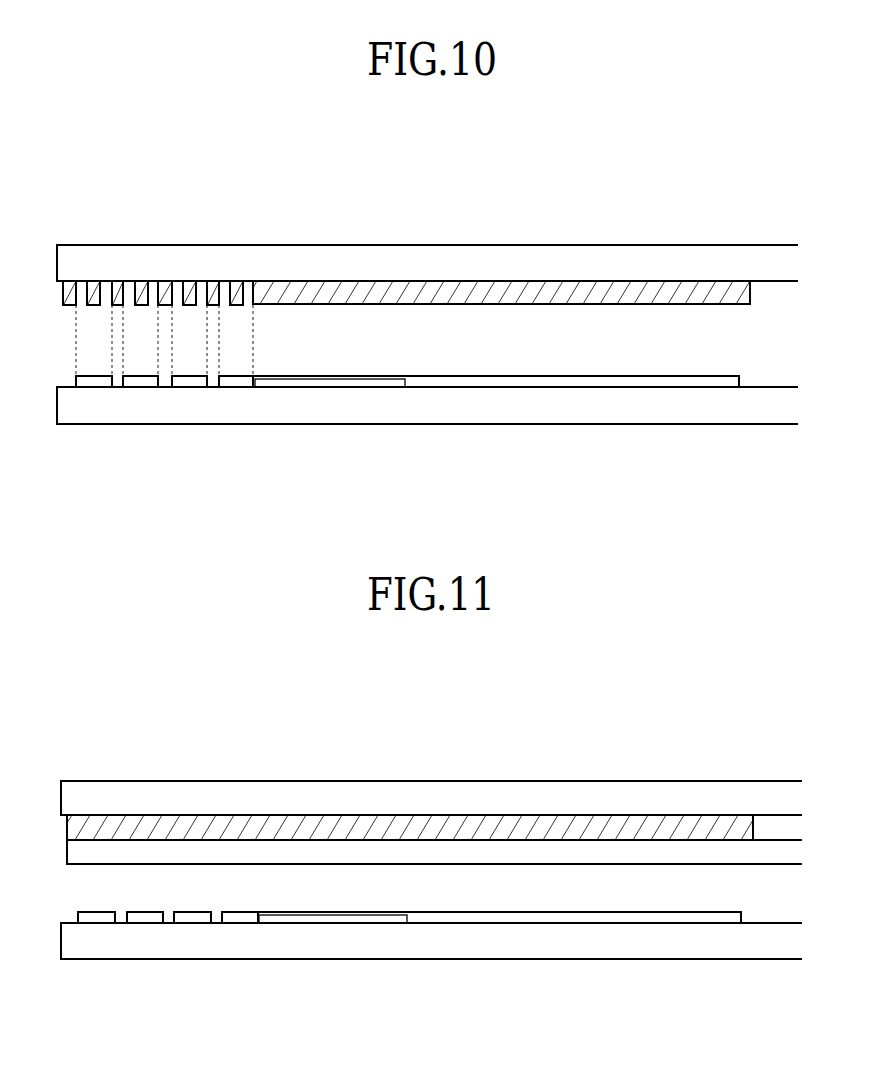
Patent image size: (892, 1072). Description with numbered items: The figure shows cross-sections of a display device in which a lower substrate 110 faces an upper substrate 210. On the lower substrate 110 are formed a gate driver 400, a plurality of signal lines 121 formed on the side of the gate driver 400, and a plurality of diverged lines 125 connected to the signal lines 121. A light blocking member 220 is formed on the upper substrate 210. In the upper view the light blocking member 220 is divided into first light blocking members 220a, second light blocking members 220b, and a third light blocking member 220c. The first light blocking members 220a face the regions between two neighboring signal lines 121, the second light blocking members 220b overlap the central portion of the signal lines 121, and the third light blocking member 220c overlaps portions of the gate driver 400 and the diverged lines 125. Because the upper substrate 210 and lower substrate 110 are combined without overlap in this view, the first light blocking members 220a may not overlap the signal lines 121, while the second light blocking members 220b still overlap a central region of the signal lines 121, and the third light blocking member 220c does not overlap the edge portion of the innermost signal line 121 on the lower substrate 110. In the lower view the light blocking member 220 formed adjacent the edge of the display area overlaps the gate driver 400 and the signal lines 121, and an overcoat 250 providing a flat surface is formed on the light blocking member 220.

In FIG. 10, the lower substrate 110 is at (410, 406).
In FIG. 11, the lower substrate 110 is at (413, 941).
In FIG. 10, the signal lines 121 is at (188, 383).
In FIG. 11, the signal lines 121 is at (191, 918).
In FIG. 10, the diverged lines 125 is at (318, 380).
In FIG. 11, the diverged lines 125 is at (321, 916).
In FIG. 10, the upper substrate 210 is at (411, 262).
In FIG. 11, the upper substrate 210 is at (415, 797).
In FIG. 10, the light blocking member 220 is at (406, 233).
In FIG. 11, the light blocking member 220 is at (553, 830).
In FIG. 10, the first light blocking members 220a is at (223, 288).
In FIG. 10, the second light blocking members 220b is at (257, 284).
In FIG. 10, the third light blocking member 220c is at (501, 252).
In FIG. 11, the overcoat 250 is at (638, 848).
In FIG. 10, the gate driver 400 is at (500, 381).
In FIG. 11, the gate driver 400 is at (503, 916).